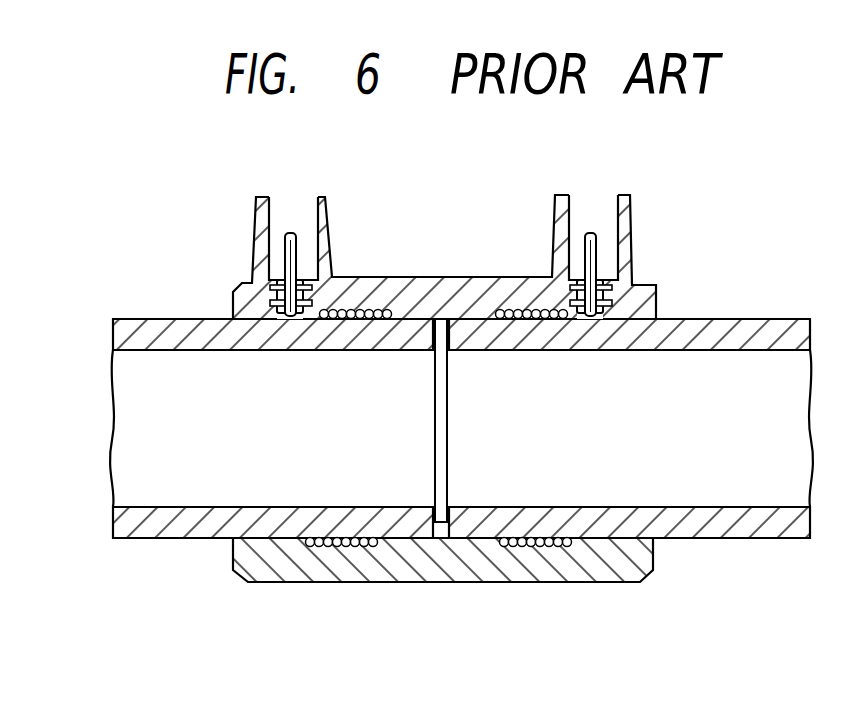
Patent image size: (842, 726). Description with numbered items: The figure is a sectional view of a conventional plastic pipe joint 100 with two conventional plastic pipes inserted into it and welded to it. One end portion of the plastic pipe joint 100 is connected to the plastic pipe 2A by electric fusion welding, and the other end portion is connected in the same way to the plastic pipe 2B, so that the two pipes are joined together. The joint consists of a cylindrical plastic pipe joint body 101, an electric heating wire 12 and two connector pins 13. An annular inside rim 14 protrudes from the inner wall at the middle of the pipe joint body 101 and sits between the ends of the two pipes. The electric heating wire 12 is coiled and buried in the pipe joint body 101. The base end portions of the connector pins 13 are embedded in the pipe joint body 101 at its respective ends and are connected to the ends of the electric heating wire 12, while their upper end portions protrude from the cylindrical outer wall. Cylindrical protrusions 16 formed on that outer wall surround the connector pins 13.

The plastic pipe 2A is at (717, 328).
The plastic pipe 2B is at (147, 318).
The electric heating wire 12 is at (357, 315).
The connector pins 13 is at (597, 237).
The annular inside rim 14 is at (428, 512).
The cylindrical protrusions 16 is at (560, 217).
The plastic pipe joint 100 is at (503, 360).
The pipe joint body 101 is at (437, 285).